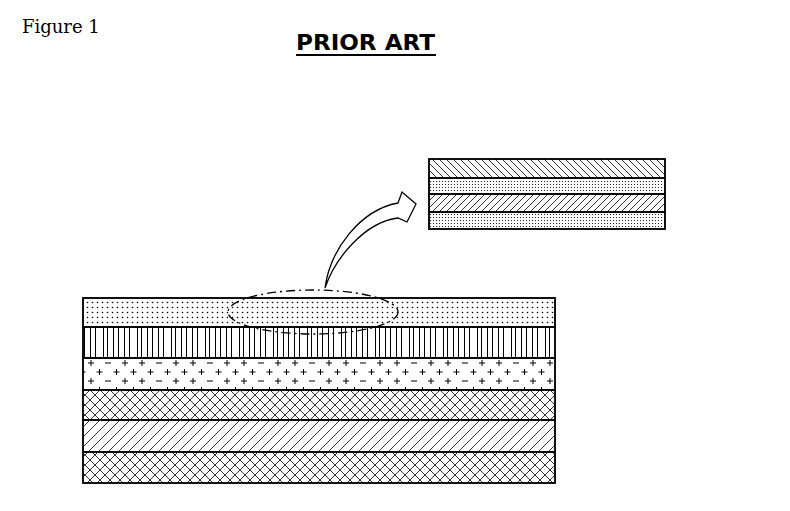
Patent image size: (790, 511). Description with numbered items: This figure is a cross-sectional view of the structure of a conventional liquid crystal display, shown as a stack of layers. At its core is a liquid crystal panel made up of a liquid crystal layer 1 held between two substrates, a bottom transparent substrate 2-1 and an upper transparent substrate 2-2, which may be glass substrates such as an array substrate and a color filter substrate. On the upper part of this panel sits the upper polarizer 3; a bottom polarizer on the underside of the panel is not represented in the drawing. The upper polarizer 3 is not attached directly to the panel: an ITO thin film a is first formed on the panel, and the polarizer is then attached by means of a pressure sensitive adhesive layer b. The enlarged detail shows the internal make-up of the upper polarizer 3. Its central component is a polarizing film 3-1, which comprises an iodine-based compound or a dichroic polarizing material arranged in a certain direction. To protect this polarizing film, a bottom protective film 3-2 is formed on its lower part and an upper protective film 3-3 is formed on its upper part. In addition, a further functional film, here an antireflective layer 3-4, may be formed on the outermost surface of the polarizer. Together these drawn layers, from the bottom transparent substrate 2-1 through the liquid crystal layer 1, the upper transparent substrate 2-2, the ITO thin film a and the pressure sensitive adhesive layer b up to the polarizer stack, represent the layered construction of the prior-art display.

The liquid crystal layer 1 is at (559, 440).
The bottom transparent substrate 2-1 is at (559, 470).
The upper transparent substrate 2-2 is at (559, 401).
The upper polarizer 3 is at (104, 297).
The polarizing film 3-1 is at (668, 200).
The bottom protective film 3-2 is at (668, 225).
The upper protective film 3-3 is at (428, 181).
The antireflective layer 3-4 is at (623, 160).
The ITO thin film a is at (89, 373).
The pressure sensitive adhesive layer b is at (89, 346).